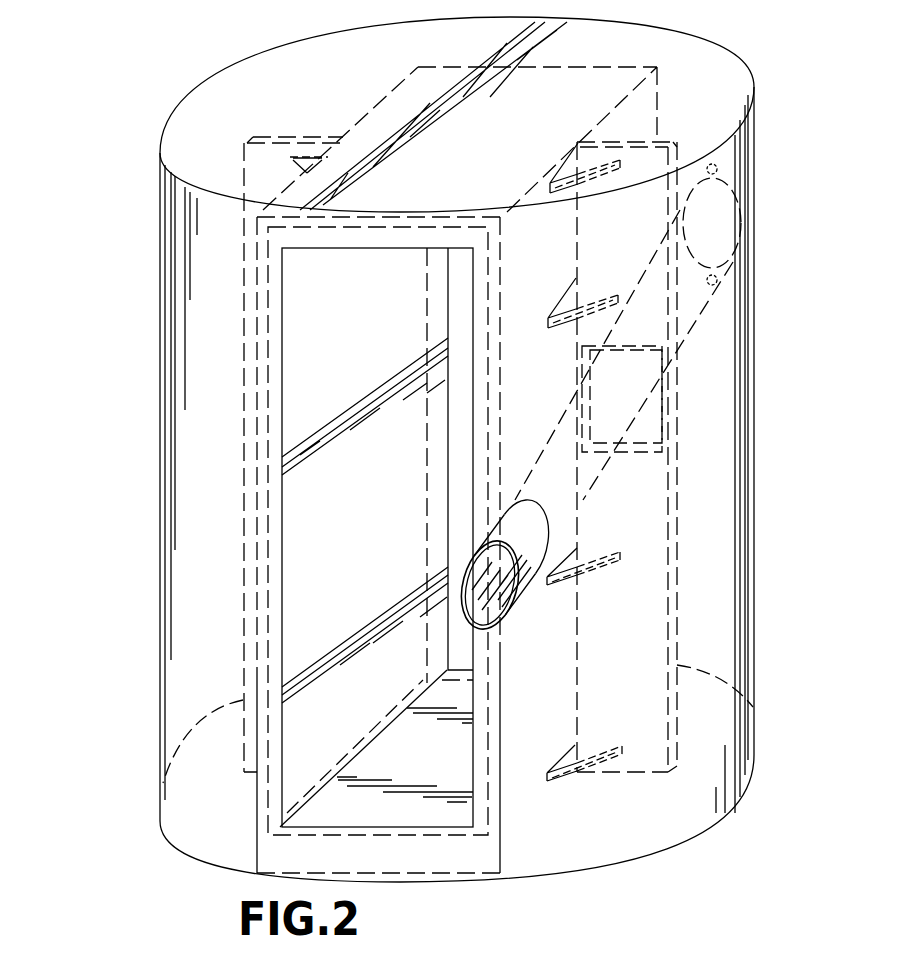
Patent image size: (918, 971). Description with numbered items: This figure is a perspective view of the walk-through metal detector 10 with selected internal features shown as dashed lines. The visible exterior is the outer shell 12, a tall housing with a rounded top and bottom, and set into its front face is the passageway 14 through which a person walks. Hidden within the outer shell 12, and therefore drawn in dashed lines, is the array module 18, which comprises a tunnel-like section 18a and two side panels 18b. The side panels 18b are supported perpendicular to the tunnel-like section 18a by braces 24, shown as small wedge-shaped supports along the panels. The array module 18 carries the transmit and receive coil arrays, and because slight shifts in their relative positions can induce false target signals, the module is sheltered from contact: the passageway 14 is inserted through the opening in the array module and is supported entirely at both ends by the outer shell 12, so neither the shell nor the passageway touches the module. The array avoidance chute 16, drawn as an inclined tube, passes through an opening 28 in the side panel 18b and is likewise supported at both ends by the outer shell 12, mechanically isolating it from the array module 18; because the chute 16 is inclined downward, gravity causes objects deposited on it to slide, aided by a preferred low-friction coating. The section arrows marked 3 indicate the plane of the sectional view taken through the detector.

The walk-through metal detector 10 is at (128, 415).
The outer shell 12 is at (157, 348).
The passageway 14 is at (308, 317).
The array avoidance chute 16 is at (528, 590).
The array module 18 is at (660, 117).
The tunnel-like section 18a is at (258, 522).
The side panels 18b is at (245, 453).
The braces 24 is at (293, 160).
The opening 28 is at (657, 427).
The section line 3- 3 is at (92, 146).